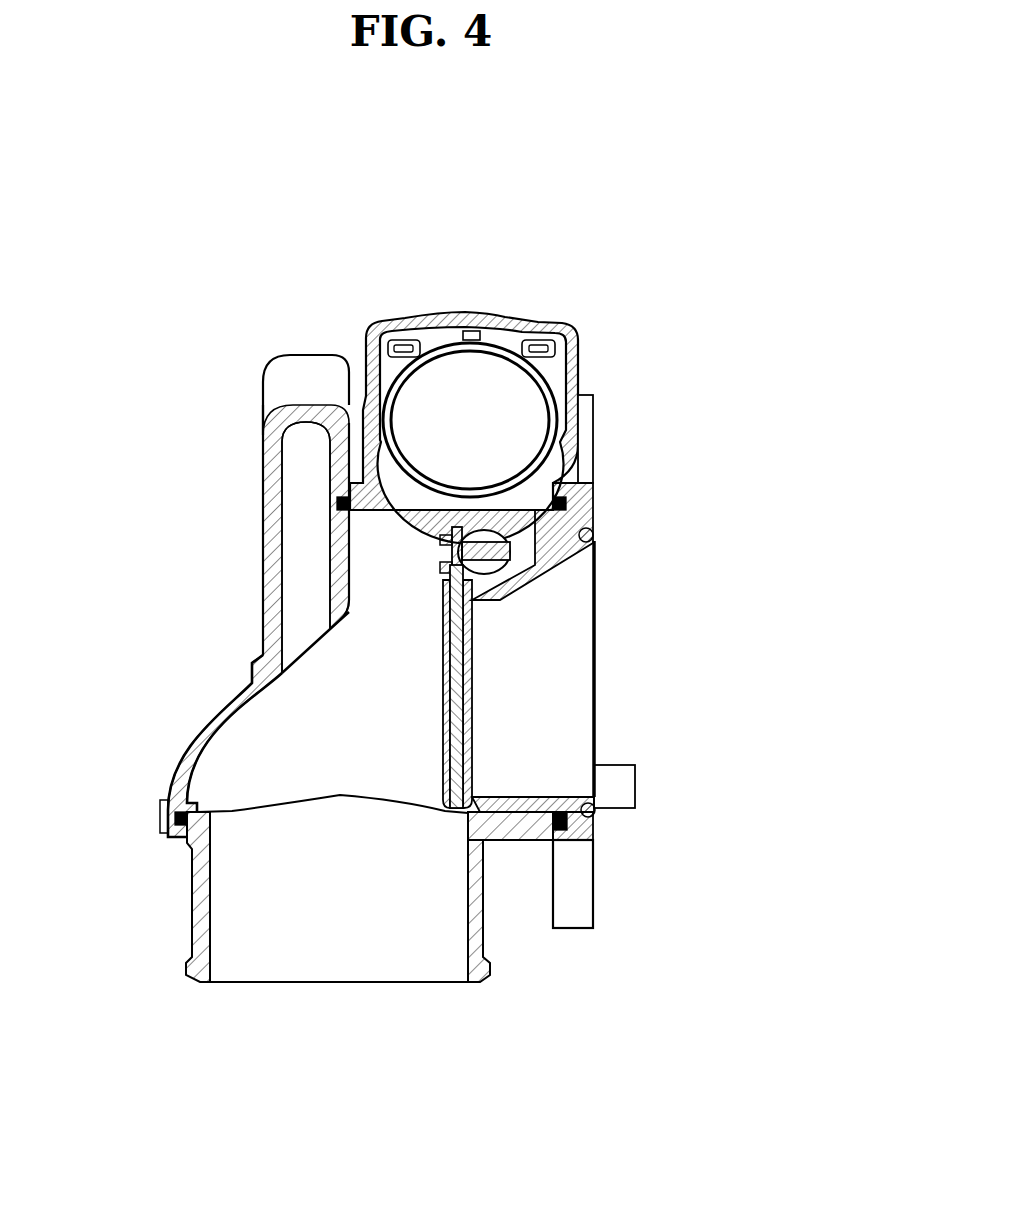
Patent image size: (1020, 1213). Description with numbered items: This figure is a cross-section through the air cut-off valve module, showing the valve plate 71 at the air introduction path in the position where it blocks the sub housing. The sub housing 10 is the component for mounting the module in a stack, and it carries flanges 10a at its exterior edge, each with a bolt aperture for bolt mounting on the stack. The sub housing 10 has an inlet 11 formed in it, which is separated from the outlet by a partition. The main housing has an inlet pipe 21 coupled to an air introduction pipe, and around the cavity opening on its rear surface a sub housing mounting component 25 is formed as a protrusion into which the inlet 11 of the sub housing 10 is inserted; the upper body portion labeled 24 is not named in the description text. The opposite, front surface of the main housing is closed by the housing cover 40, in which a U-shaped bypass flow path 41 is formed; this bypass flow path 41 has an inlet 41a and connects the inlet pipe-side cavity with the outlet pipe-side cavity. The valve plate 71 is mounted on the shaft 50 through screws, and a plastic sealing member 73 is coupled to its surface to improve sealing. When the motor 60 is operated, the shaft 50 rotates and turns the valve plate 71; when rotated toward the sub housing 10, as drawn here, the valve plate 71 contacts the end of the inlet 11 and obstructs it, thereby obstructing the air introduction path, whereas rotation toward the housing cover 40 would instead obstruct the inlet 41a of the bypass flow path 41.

The sub housing 10 is at (592, 512).
The flange 10a is at (577, 889).
The inlet 11 is at (520, 797).
The inlet pipe 21 is at (326, 950).
The valve body / upper housing 24 is at (468, 322).
The sub housing mounting component 25 is at (503, 833).
The housing cover 40 is at (225, 688).
The bypass flow path 41 is at (305, 470).
The inlet of the bypass flow path 41a is at (299, 654).
The shaft 50 is at (484, 534).
The motor 60 is at (505, 388).
The valve plate 71 is at (473, 642).
The sealing member 73 is at (473, 715).